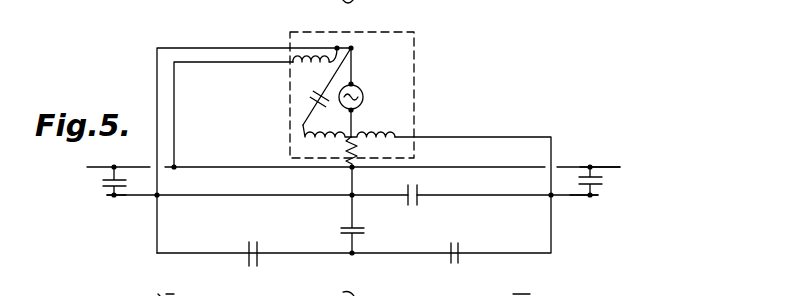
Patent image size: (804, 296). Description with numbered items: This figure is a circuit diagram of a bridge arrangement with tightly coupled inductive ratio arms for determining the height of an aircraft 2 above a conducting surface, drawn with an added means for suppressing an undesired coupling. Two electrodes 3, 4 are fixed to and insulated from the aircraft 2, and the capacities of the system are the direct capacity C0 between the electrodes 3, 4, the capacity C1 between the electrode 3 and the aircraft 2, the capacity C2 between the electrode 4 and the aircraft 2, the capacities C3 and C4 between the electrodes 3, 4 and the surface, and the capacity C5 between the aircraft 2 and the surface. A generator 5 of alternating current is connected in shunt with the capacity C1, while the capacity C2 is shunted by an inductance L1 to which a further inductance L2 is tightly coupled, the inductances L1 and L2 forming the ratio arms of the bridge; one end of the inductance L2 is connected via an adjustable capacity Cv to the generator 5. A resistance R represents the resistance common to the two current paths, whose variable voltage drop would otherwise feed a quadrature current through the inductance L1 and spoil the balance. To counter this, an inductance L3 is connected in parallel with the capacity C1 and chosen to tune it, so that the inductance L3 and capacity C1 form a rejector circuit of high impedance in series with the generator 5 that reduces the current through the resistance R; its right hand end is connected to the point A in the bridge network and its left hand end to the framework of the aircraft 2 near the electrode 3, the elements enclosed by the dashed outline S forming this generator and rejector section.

The point A in the bridge network A is at (351, 48).
The dashed enclosure / unit S is at (416, 60).
The generator of alternating current 5 is at (366, 94).
The inductance L3 is at (307, 70).
The adjustable capacity Cv is at (314, 104).
The inductance L2 is at (306, 143).
The inductance L1 is at (386, 127).
The resistance R is at (348, 150).
The capacity between aircraft and surface C5 is at (336, 229).
The capacity between electrode 3 and aircraft C1 is at (97, 185).
The electrode 3 is at (122, 209).
The capacity between electrode 4 and aircraft C2 is at (603, 181).
The aircraft 2 is at (594, 164).
The electrode 4 is at (580, 198).
The direct capacity between electrodes C0 is at (420, 203).
The capacity between electrode 3 and surface C3 is at (248, 276).
The capacity between electrode 4 and surface C4 is at (460, 263).